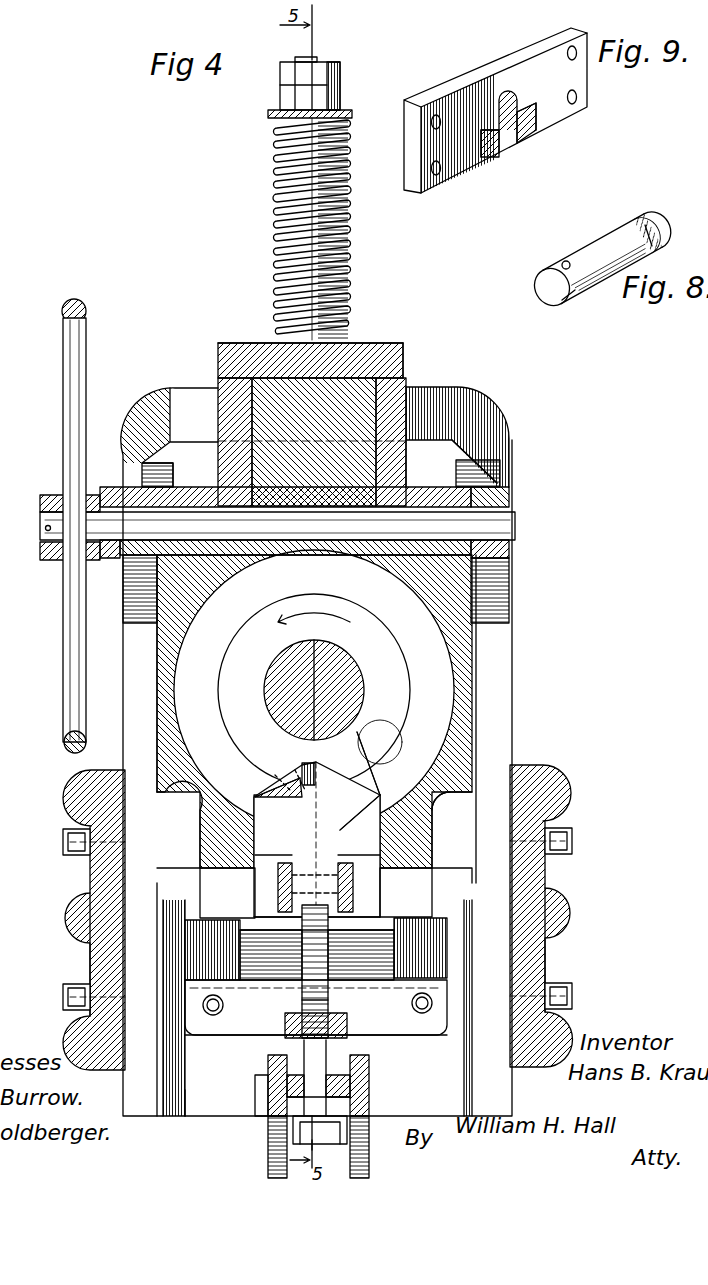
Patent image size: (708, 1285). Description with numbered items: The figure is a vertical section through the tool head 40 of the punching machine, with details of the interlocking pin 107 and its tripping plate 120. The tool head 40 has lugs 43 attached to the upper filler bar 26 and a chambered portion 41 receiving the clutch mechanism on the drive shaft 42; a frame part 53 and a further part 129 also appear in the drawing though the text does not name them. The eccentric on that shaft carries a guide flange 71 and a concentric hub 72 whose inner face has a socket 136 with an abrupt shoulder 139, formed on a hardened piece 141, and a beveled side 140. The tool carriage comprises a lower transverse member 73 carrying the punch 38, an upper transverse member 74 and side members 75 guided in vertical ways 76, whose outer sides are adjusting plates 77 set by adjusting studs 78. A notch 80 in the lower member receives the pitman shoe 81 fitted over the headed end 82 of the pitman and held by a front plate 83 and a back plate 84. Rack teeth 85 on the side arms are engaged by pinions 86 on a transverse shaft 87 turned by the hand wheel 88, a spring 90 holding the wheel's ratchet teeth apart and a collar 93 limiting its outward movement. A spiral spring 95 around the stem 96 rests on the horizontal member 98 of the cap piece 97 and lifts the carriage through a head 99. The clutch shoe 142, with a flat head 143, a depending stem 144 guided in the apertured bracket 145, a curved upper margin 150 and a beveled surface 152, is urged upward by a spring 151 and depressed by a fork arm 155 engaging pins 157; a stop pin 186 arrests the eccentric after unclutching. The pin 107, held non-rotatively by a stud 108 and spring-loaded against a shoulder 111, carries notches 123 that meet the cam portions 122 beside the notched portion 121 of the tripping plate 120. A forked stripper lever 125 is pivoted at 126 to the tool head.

In FIG. 4, the upper filler bar 26 is at (262, 385).
In FIG. 4, the tool or punch 38 is at (268, 1135).
In FIG. 4, the tool head 40 is at (425, 610).
In FIG. 4, the chambered portion 41 is at (440, 798).
In FIG. 4, the drive shaft 42 is at (318, 683).
In FIG. 4, the lugs 43 is at (222, 390).
In FIG. 4, the bracket 53 is at (68, 905).
In FIG. 4, the guide flange 71 is at (348, 817).
In FIG. 4, the concentric hub 72 is at (222, 678).
In FIG. 4, the lower transverse member 73 is at (198, 1098).
In FIG. 4, the upper transverse member 74 is at (440, 452).
In FIG. 4, the side members 75 is at (317, 778).
In FIG. 4, the vertical ways 76 is at (162, 908).
In FIG. 4, the adjusting plates 77 is at (88, 952).
In FIG. 4, the adjusting studs 78 is at (63, 998).
In FIG. 4, the notch 80 is at (390, 965).
In FIG. 4, the pitman shoe 81 is at (248, 922).
In FIG. 4, the lower headed end 82 is at (316, 949).
In FIG. 4, the front plate 83 is at (440, 905).
In FIG. 4, the back plate 84 is at (372, 985).
In FIG. 4, the rack teeth 85 is at (123, 590).
In FIG. 4, the pinions 86 is at (125, 495).
In FIG. 4, the horizontal transverse shaft 87 is at (40, 525).
In FIG. 4, the hand wheel 88 is at (86, 320).
In FIG. 4, the spring 90 is at (105, 558).
In FIG. 4, the collar 93 is at (45, 495).
In FIG. 4, the spiral spring 95 is at (276, 188).
In FIG. 4, the stem 96 is at (318, 60).
In FIG. 4, the angle shaped cap piece 97 is at (410, 380).
In FIG. 4, the horizontal member 98 is at (368, 343).
In FIG. 4, the head 99 is at (342, 92).
In FIG. 8, the pin 107 is at (600, 250).
In FIG. 8, the stud 108 is at (565, 262).
In FIG. 8, the shoulder 111 is at (575, 292).
In FIG. 9, the tripping plate 120 is at (506, 60).
In FIG. 9, the notched portion 121 is at (497, 140).
In FIG. 9, the cam portions 122 is at (528, 130).
In FIG. 8, the notches 123 is at (648, 225).
In FIG. 4, the forked stripper lever 125 is at (370, 1082).
In FIG. 4, the pivot 126 is at (312, 1078).
In FIG. 4, the nut 129 is at (362, 1135).
In FIG. 4, the socket 136 is at (330, 755).
In FIG. 4, the abrupt wall or shoulder 139 is at (378, 736).
In FIG. 4, the beveled side 140 is at (294, 762).
In FIG. 4, the hardened piece 141 is at (394, 740).
In FIG. 4, the clutch shoe 142 is at (392, 789).
In FIG. 4, the flat head 143 is at (317, 864).
In FIG. 4, the depending stem 144 is at (332, 935).
In FIG. 4, the apertured bracket 145 is at (286, 1020).
In FIG. 4, the curved upper margin 150 is at (270, 778).
In FIG. 4, the spring 151 is at (330, 1002).
In FIG. 4, the beveled surface 152 is at (258, 790).
In FIG. 4, the fork arm 155 is at (315, 866).
In FIG. 4, the pins 157 is at (280, 866).
In FIG. 4, the stop pin 186 is at (265, 760).